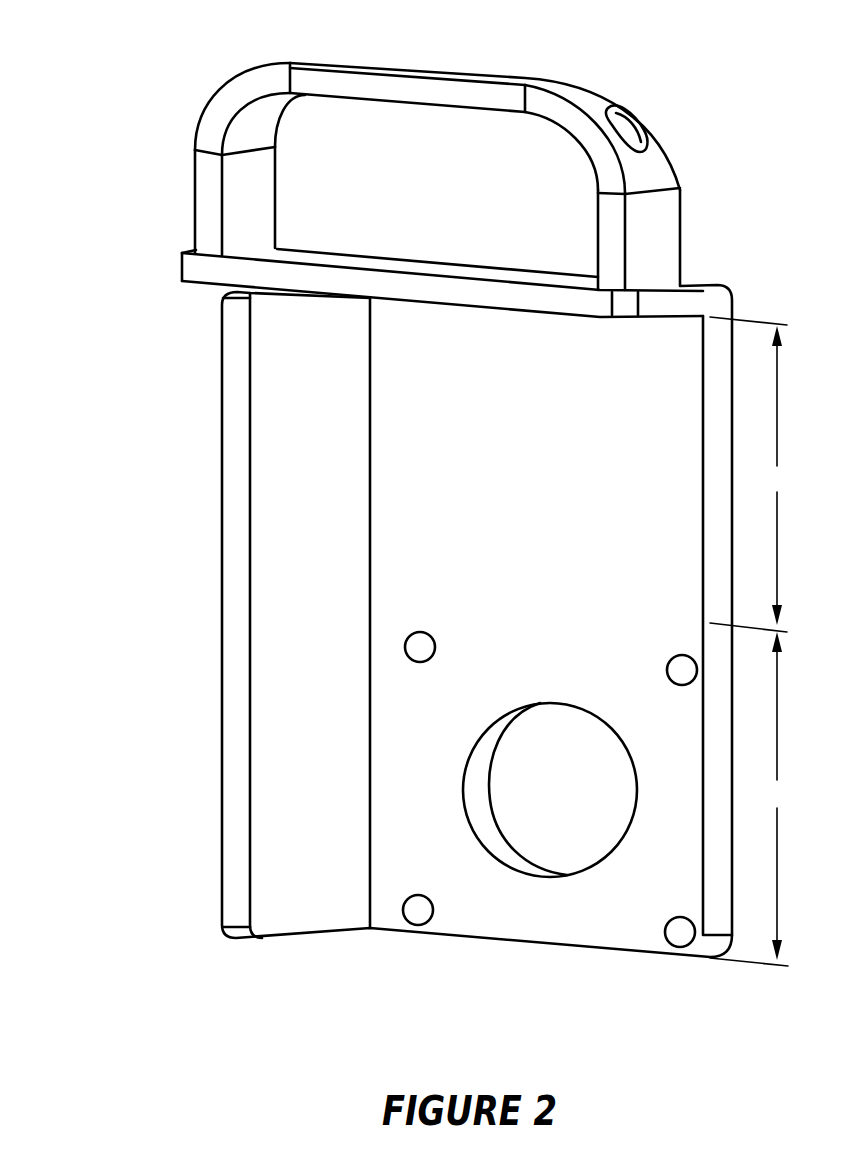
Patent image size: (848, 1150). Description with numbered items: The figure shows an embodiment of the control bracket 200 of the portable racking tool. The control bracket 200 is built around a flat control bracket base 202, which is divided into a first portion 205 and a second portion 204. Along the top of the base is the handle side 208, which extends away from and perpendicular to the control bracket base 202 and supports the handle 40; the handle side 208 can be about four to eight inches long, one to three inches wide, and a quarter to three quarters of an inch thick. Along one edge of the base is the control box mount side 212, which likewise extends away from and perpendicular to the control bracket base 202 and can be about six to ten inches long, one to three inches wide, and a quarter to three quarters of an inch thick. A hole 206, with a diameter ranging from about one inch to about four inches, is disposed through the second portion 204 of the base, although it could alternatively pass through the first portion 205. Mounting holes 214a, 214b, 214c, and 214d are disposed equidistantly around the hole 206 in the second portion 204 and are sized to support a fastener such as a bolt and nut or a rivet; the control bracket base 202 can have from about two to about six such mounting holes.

The control bracket 200 is at (138, 100).
The handle 40 is at (442, 75).
The handle side 208 is at (416, 262).
The control bracket base 202 is at (509, 912).
The control box mount side 212 is at (236, 643).
The hole 206 is at (465, 809).
The mounting hole 214a is at (402, 643).
The mounting hole 214b is at (662, 668).
The mounting hole 214c is at (399, 908).
The mounting hole 214d is at (662, 930).
The first portion 205 is at (753, 474).
The second portion 204 is at (753, 799).